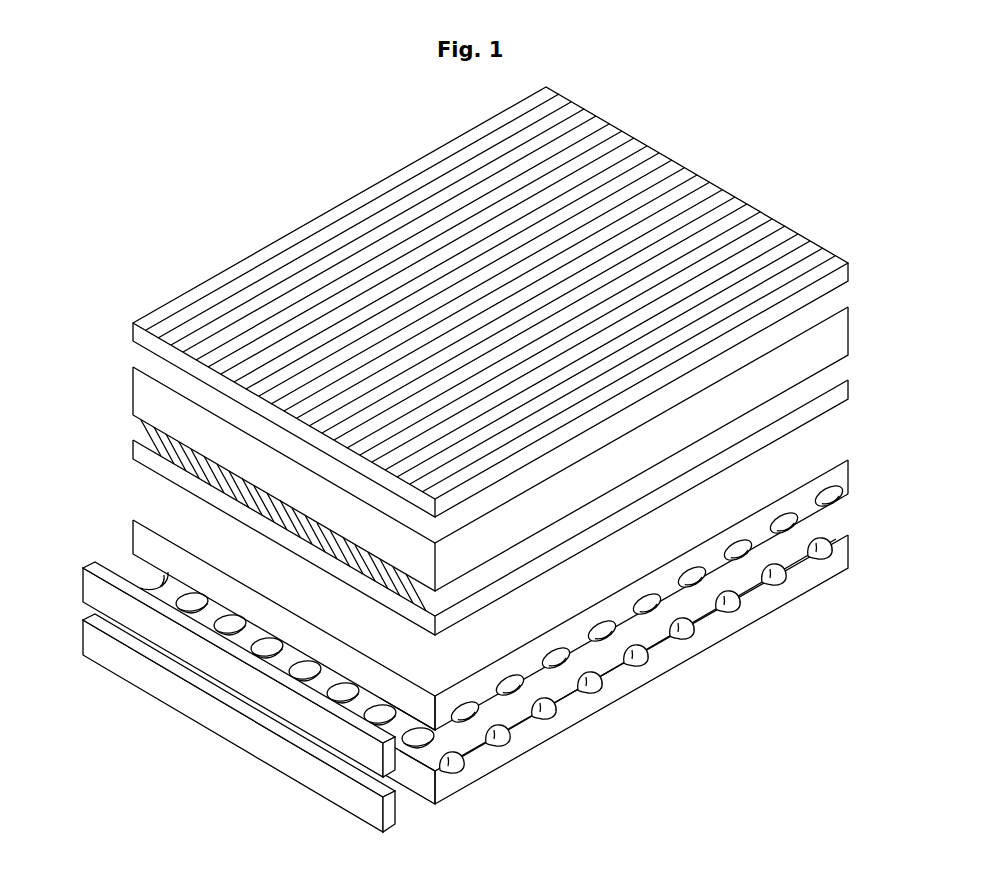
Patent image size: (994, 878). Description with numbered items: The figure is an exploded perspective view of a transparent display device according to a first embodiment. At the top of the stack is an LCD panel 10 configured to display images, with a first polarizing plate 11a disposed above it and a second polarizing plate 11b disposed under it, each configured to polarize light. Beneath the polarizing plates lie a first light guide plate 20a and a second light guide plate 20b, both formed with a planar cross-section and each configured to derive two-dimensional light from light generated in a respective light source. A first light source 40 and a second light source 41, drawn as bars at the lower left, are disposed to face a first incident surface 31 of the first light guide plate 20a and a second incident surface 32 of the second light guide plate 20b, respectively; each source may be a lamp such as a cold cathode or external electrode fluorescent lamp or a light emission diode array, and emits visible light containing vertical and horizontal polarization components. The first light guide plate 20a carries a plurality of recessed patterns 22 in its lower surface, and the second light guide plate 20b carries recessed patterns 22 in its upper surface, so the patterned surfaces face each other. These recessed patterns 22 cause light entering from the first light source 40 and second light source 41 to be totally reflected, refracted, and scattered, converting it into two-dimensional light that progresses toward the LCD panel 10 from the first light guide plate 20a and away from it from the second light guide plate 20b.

The LCD panel 10 is at (848, 332).
The first polarizing plate 11a is at (848, 272).
The second polarizing plate 11b is at (848, 392).
The first light guide plate 20a is at (848, 478).
The second light guide plate 20b is at (848, 550).
The recessed patterns 22 is at (610, 690).
The first incident surface 31 is at (418, 707).
The second incident surface 32 is at (418, 783).
The first light source 40 is at (92, 588).
The second light source 41 is at (92, 644).